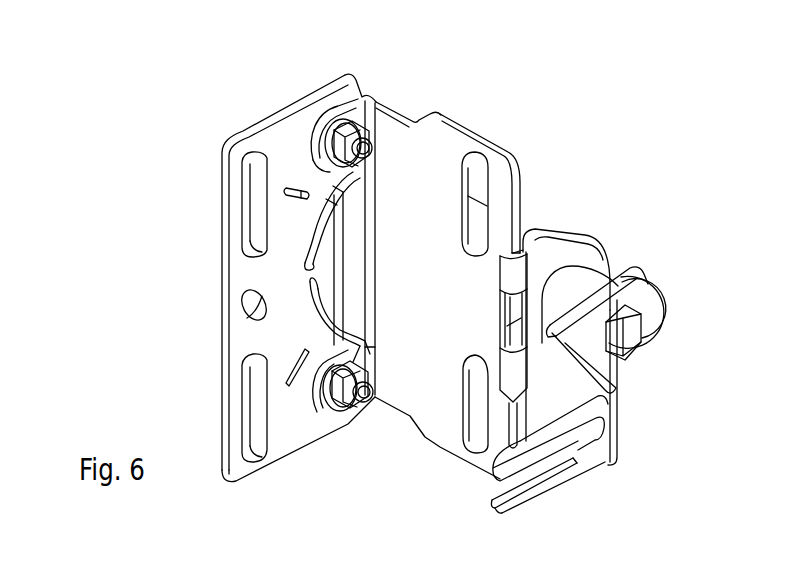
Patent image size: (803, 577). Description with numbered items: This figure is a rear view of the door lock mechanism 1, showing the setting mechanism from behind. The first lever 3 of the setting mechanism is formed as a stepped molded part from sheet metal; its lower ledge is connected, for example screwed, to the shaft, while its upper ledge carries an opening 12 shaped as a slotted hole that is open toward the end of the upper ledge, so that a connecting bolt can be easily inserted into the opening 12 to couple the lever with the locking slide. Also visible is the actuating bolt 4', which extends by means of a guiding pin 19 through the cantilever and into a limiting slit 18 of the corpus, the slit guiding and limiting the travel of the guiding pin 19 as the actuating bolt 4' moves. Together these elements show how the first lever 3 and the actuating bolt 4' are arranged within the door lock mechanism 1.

The door lock mechanism 1 is at (556, 130).
The first lever 3 is at (617, 433).
The actuating bolt 4' is at (263, 278).
The opening 12 is at (570, 458).
The limiting slit 18 is at (338, 395).
The guiding pin 19 is at (317, 303).